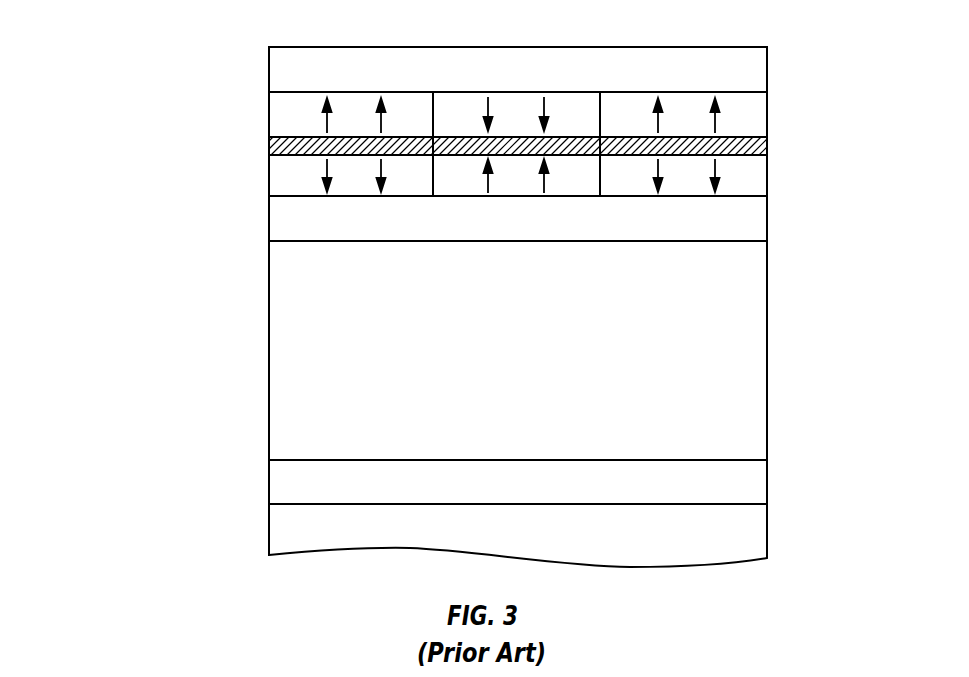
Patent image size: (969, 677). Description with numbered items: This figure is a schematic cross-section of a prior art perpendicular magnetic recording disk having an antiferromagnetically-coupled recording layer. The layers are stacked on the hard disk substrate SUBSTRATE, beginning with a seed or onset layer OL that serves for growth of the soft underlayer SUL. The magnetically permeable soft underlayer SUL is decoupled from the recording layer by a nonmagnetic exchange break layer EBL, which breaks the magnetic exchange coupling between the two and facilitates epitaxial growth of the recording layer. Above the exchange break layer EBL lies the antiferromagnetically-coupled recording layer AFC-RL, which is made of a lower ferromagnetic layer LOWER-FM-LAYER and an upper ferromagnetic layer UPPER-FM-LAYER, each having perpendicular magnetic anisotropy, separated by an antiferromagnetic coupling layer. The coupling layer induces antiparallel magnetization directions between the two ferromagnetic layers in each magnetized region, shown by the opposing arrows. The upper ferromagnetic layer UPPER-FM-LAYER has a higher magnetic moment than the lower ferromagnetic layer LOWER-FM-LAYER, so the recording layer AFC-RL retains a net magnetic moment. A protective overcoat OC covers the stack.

The protective overcoat OC is at (518, 69).
The upper ferromagnetic layer UPPER-FM-LAYER is at (269, 107).
The lower ferromagnetic layer LOWER-FM-LAYER is at (269, 178).
The antiferromagnetically-coupled recording layer AFC-RL is at (787, 93).
The exchange break layer EBL is at (518, 218).
The soft underlayer SUL is at (518, 350).
The onset layer OL is at (518, 482).
The hard disk substrate SUBSTRATE is at (518, 529).